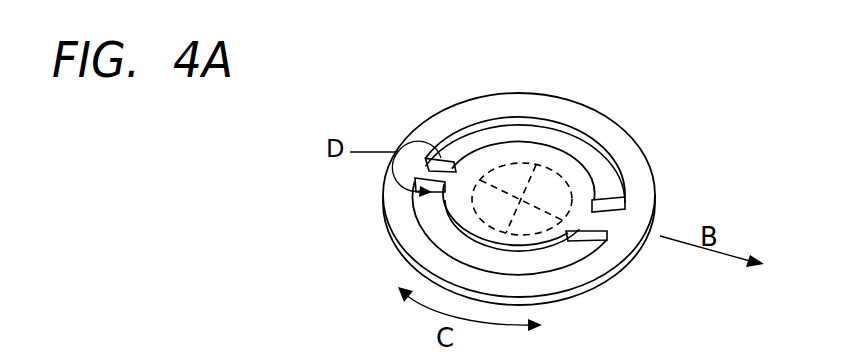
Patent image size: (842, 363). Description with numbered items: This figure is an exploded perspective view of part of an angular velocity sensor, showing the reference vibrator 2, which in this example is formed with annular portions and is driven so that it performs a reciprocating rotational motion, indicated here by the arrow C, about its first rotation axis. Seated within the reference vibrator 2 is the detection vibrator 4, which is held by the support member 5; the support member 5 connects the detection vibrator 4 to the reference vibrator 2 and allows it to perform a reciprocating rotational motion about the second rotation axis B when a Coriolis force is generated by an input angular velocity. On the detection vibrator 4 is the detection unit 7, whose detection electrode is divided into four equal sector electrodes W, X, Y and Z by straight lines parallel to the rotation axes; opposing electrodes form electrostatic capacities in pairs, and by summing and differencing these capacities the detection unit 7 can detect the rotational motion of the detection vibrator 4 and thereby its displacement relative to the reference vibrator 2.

The reference vibrator 2 is at (398, 236).
The detection vibrator 4 is at (580, 196).
The support member 5 is at (437, 160).
The detection unit 7 is at (527, 205).